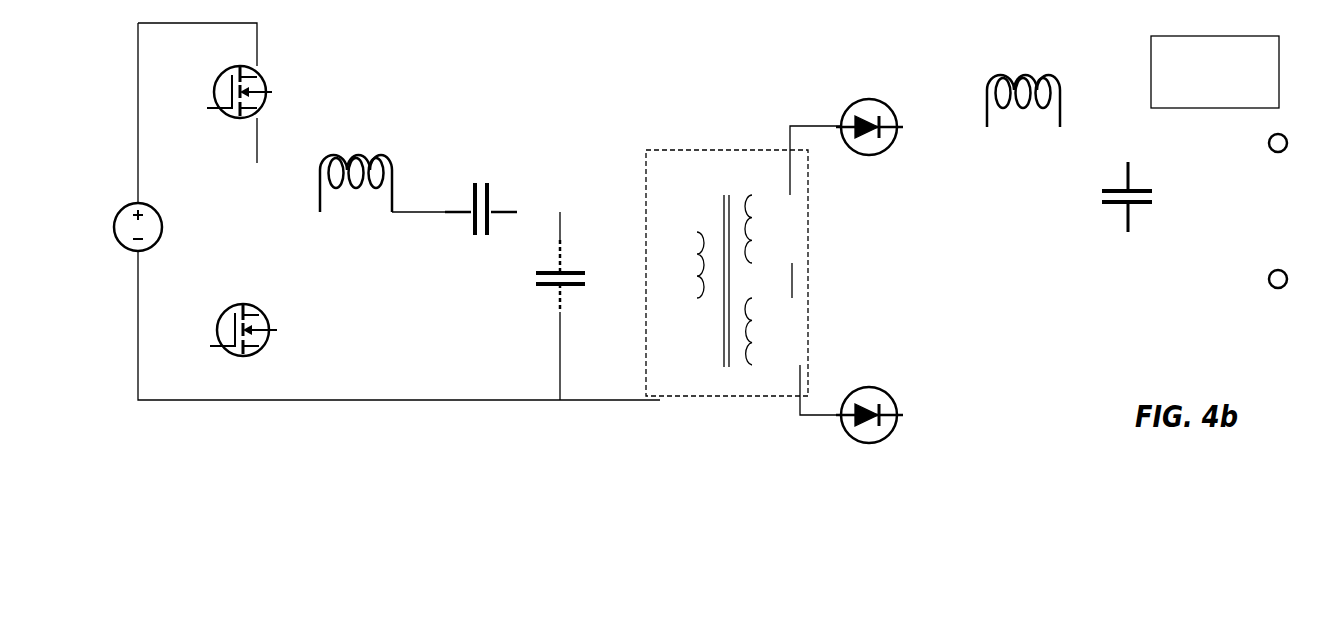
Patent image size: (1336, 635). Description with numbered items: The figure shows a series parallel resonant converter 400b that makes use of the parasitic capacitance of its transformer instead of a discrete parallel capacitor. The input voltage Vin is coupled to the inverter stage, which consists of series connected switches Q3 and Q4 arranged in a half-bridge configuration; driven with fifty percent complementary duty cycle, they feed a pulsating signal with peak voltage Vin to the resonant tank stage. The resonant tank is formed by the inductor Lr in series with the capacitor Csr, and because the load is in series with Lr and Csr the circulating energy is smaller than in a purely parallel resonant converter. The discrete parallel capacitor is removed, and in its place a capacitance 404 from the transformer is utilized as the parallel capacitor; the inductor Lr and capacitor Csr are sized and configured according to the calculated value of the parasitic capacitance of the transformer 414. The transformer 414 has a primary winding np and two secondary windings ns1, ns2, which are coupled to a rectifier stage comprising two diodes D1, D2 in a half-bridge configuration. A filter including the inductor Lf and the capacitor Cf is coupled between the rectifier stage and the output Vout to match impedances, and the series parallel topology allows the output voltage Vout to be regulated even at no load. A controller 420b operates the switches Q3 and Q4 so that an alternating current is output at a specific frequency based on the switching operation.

The series parallel resonant converter 400b is at (422, 55).
The capacitance 404 is at (583, 306).
The transformer 414 is at (743, 252).
The controller 420b is at (1215, 72).
The switch Q3 is at (239, 77).
The switch Q4 is at (243, 315).
The inductor Lr is at (356, 170).
The capacitor Csr is at (481, 195).
The input voltage Vin is at (121, 227).
The primary winding np is at (678, 265).
The secondary winding ns1 is at (771, 229).
The secondary winding ns2 is at (772, 331).
The diode D1 is at (869, 141).
The diode D2 is at (869, 429).
The inductor Lf is at (1023, 85).
The capacitor Cf is at (1143, 197).
The output voltage Vout is at (1302, 211).